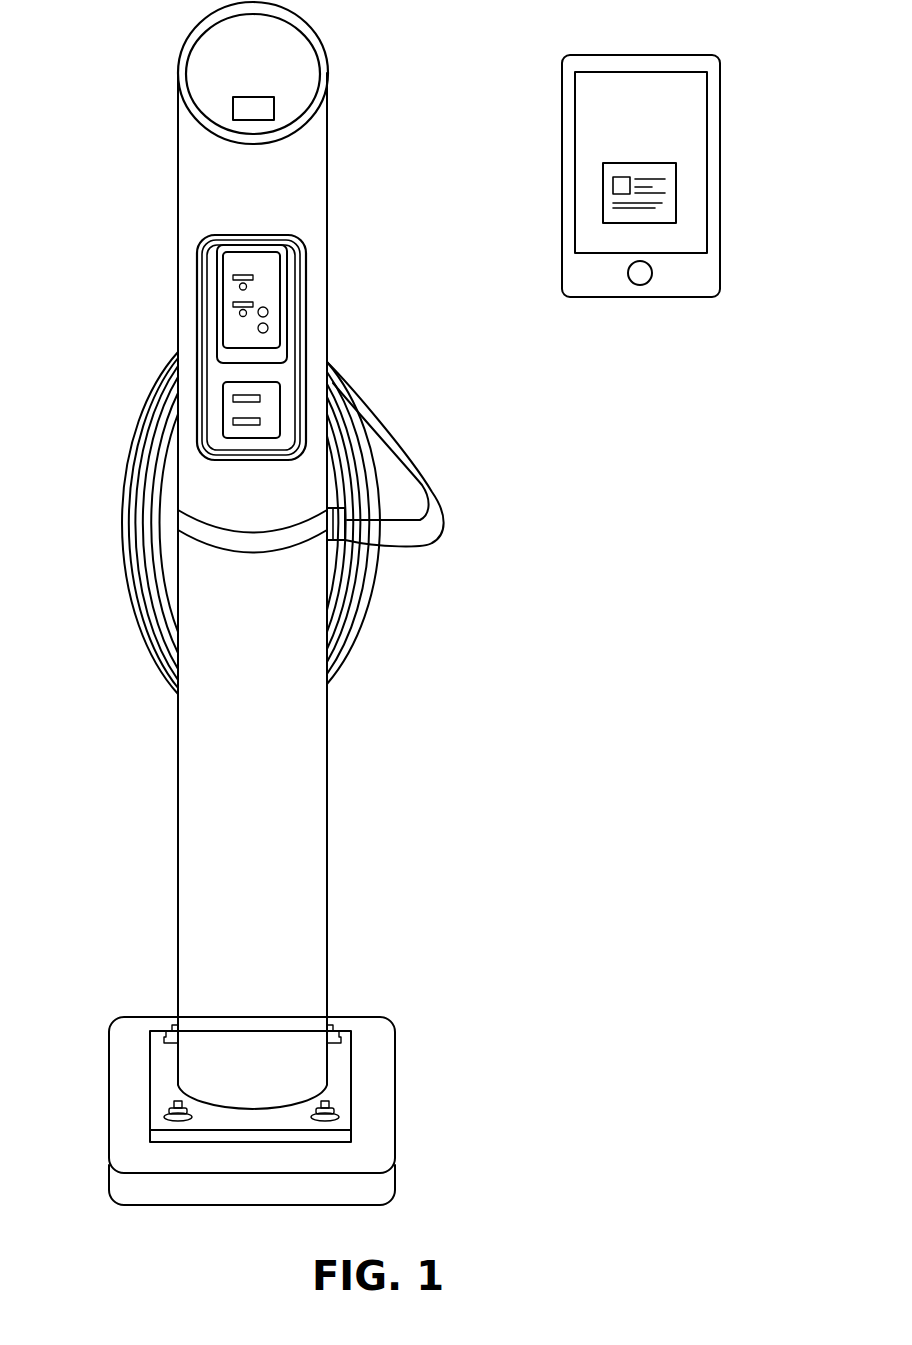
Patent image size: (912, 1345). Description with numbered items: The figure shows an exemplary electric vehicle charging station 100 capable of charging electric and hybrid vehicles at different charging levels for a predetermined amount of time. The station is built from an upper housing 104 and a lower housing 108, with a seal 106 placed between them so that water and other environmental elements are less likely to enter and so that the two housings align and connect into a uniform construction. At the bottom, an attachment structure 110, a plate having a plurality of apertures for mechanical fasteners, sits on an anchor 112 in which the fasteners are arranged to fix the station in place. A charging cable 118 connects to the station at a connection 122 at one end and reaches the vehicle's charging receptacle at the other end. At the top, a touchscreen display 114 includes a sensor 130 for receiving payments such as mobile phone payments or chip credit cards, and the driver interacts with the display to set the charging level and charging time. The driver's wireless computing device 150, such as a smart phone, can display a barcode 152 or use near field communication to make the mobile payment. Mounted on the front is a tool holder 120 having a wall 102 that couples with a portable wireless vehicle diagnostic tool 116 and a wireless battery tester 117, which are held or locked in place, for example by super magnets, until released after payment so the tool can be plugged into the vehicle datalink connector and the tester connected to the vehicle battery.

The electric vehicle charging station 100 is at (134, 64).
The wall 102 is at (284, 372).
The upper housing 104 is at (313, 182).
The seal 106 is at (190, 528).
The lower housing 108 is at (295, 845).
The attachment structure 110 is at (338, 1086).
The anchor 112 is at (380, 1190).
The touchscreen display 114 is at (298, 57).
The portable wireless vehicle diagnostic tool 116 is at (272, 291).
The wireless battery tester 117 is at (272, 412).
The charging cable 118 is at (447, 525).
The tool holder 120 is at (205, 312).
The connection 122 is at (333, 553).
The sensor 130 is at (274, 107).
The wireless computing device 150 is at (720, 136).
The barcode 152 is at (676, 215).